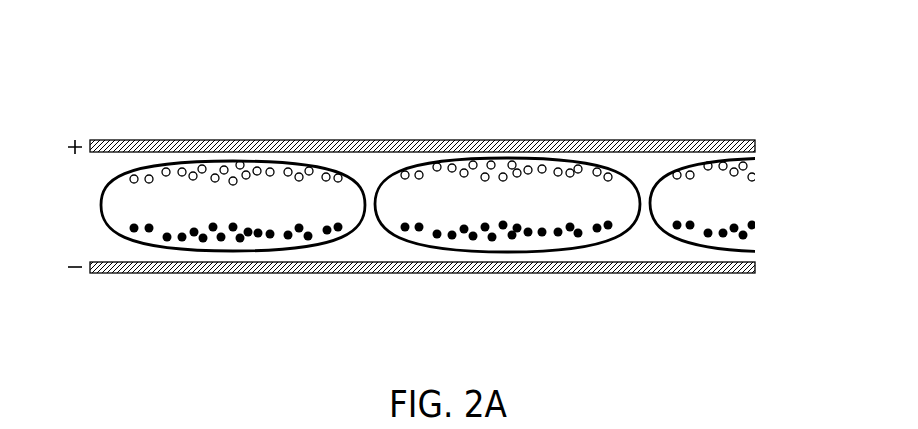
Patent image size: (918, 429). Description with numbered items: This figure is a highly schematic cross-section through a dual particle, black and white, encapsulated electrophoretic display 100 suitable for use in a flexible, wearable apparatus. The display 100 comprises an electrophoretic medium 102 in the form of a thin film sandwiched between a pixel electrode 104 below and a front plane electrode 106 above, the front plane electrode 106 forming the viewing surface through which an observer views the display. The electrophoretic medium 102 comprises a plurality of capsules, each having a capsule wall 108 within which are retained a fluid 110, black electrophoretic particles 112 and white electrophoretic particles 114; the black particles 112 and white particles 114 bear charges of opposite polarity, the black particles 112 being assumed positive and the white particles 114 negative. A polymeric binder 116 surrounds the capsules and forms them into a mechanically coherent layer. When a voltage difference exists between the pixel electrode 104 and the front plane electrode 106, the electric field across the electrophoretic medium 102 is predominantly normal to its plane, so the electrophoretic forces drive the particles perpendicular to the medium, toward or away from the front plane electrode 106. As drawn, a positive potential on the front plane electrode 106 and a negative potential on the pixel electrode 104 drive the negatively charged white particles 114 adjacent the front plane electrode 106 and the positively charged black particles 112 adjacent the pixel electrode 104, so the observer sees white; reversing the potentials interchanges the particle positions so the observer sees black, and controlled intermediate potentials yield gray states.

The encapsulated electrophoretic display 100 is at (450, 87).
The electrophoretic medium 102 is at (78, 196).
The pixel electrode 104 is at (400, 273).
The front plane electrode 106 is at (698, 140).
The capsule wall 108 is at (277, 253).
The fluid 110 is at (123, 215).
The black electrophoretic particles 112 is at (202, 240).
The white electrophoretic particles 114 is at (182, 168).
The polymeric binder 116 is at (640, 242).